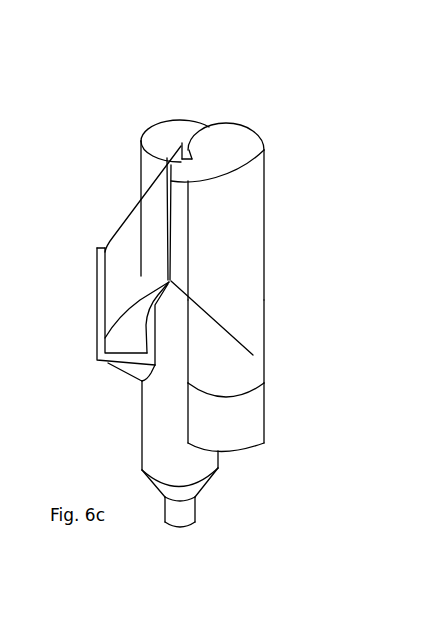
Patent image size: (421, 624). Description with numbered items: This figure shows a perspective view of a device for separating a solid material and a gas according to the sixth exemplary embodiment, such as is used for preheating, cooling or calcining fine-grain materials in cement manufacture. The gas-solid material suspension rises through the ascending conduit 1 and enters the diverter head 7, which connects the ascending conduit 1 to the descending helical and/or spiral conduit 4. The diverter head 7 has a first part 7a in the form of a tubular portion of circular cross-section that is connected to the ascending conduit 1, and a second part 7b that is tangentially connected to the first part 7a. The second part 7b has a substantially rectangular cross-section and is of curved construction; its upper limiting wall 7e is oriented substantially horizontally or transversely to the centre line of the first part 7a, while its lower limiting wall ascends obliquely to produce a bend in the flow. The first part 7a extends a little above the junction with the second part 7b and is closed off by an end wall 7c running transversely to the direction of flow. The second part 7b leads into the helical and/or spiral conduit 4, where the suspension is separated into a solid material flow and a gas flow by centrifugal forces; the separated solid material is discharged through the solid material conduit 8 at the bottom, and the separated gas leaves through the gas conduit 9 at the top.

The diverter head 7 is at (123, 107).
The first part of the diverter head 7a is at (230, 370).
The second part of the diverter head 7b is at (198, 213).
The end wall 7c is at (237, 144).
The upper limiting wall 7e is at (198, 173).
The gas conduit 9 is at (169, 138).
The helical and/or spiral conduit 4 is at (130, 243).
The ascending conduit 1 is at (245, 425).
The solid material conduit 8 is at (180, 513).